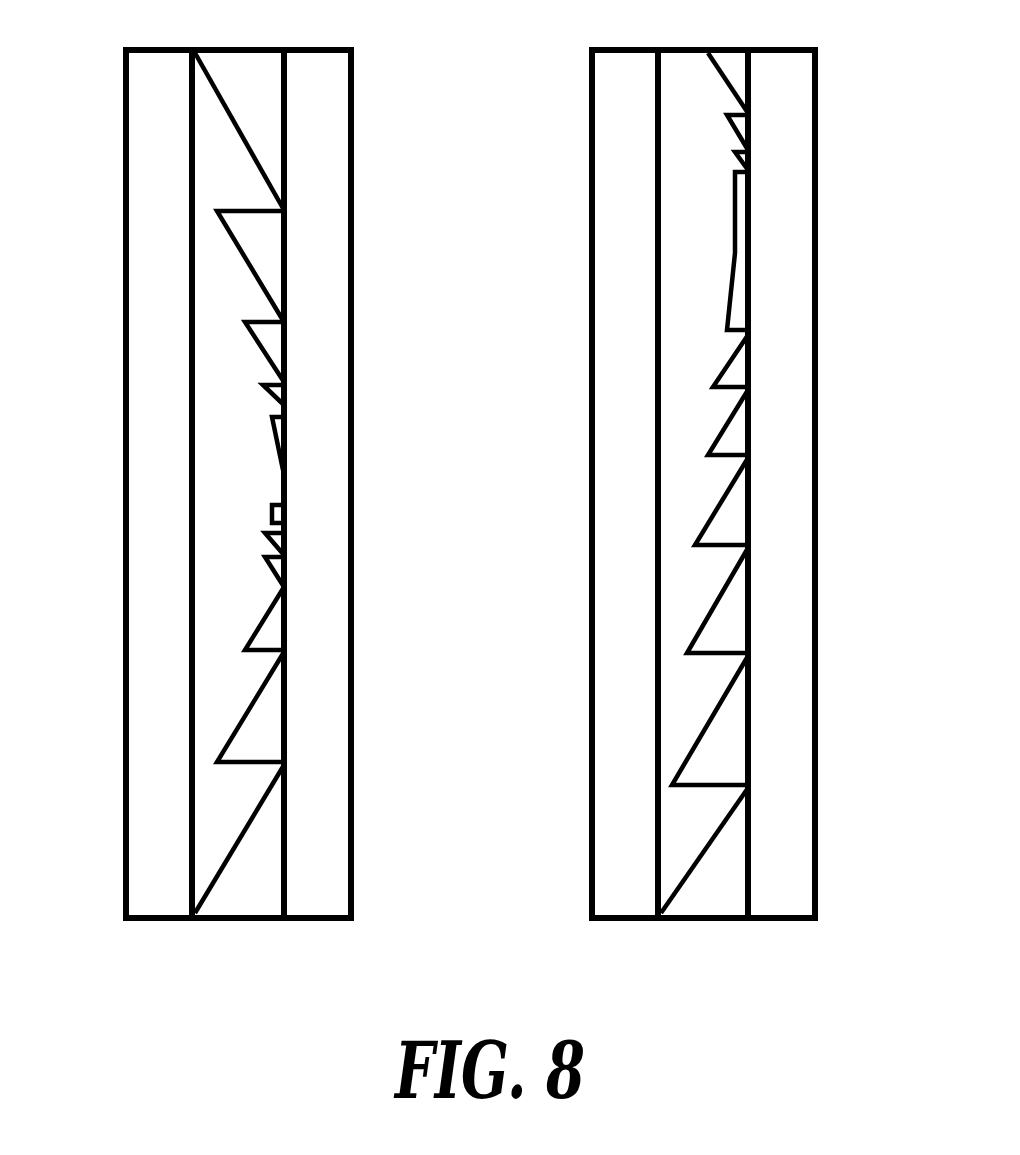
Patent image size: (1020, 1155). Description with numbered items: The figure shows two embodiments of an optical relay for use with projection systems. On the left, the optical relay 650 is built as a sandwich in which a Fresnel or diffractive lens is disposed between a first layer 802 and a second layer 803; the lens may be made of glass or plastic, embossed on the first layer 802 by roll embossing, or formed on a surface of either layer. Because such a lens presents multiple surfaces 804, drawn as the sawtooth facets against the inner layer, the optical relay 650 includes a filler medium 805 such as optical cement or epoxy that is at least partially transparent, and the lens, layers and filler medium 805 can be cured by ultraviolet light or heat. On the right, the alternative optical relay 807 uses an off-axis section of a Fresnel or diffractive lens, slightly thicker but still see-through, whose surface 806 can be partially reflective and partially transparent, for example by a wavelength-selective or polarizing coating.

The optical relay 650 is at (353, 122).
The first layer 802 is at (337, 380).
The second layer 803 is at (124, 330).
The surfaces 804 is at (275, 510).
The filler medium 805 is at (228, 683).
The surface 806 is at (720, 503).
The optical relay 807 is at (817, 107).